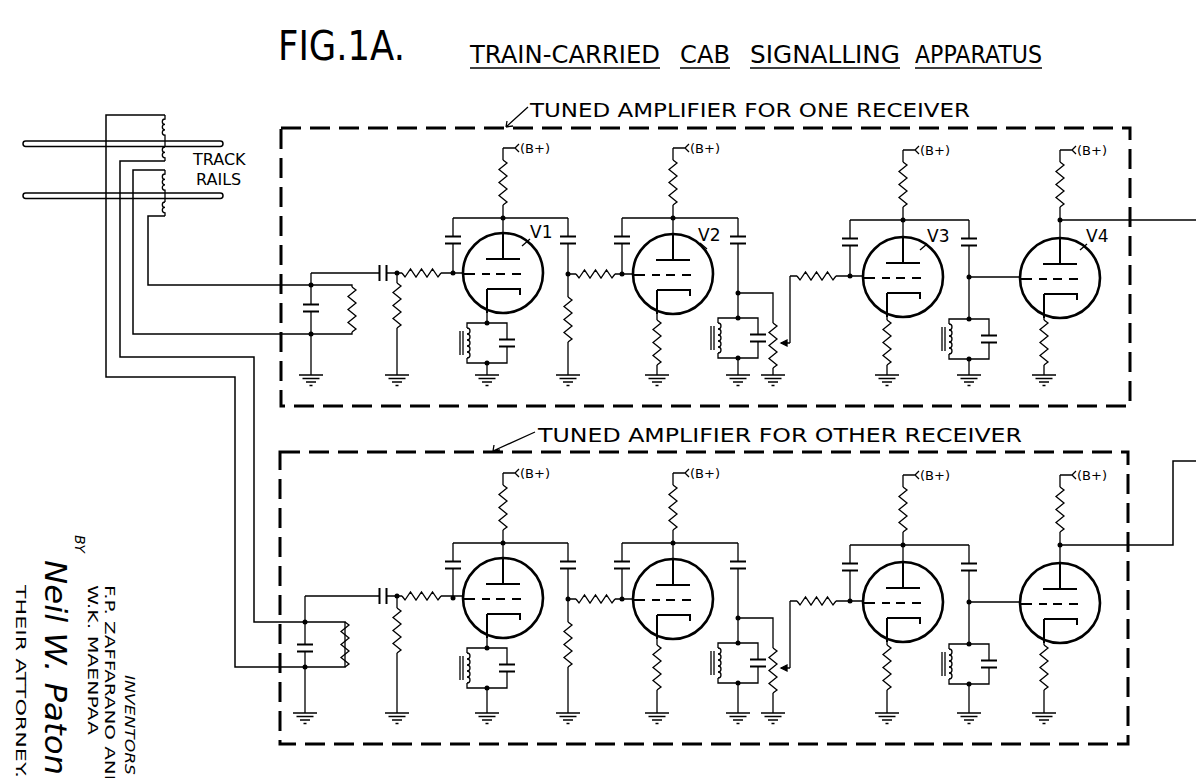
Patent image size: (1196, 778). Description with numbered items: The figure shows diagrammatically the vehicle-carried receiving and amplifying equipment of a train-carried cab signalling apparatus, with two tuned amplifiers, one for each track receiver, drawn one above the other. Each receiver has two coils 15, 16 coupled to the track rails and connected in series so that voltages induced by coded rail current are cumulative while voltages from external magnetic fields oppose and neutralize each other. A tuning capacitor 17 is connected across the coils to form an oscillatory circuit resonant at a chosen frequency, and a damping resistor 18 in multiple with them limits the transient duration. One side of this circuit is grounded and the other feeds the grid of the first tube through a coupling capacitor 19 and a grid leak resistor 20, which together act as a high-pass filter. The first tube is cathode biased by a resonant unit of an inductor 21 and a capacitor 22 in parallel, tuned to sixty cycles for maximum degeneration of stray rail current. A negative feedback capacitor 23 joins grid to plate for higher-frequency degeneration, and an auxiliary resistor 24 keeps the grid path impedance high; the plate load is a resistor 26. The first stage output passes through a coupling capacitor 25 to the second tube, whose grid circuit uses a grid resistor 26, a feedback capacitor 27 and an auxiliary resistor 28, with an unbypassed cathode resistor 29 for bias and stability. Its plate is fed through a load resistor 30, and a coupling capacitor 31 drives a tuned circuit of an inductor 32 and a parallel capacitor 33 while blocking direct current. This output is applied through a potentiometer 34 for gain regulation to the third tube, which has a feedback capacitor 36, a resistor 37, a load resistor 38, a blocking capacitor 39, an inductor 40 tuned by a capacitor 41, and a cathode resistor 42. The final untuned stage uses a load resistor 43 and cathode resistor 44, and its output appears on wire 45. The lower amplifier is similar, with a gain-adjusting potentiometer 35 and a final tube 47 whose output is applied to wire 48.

The receiver coil 15 is at (195, 212).
The receiver coil 16 is at (175, 229).
The tuning capacitor 17 is at (313, 314).
The damping resistor 18 is at (362, 306).
The coupling capacitor 19 is at (382, 267).
The grid leak resistor 20 is at (400, 312).
The inductor 21 is at (465, 354).
The capacitor 22 is at (510, 352).
The negative feedback capacitor 23 is at (451, 237).
The auxiliary resistor 24 is at (420, 269).
The coupling capacitor 25 is at (572, 236).
The resistor 26 is at (576, 341).
The negative feedback capacitor 27 is at (628, 245).
The auxiliary resistor 28 is at (600, 285).
The cathode resistor 29 is at (659, 360).
The load resistor 30 is at (679, 196).
The coupling capacitor 31 is at (745, 236).
The inductor 32 is at (718, 356).
The capacitor 33 is at (753, 345).
The potentiometer 34 is at (783, 355).
The gain-adjusting potentiometer 35 is at (798, 684).
The negative feedback capacitor 36 is at (841, 238).
The resistor 37 is at (805, 283).
The load resistor 38 is at (910, 194).
The blocking capacitor 39 is at (976, 238).
The inductor 40 is at (950, 357).
The capacitor 41 is at (992, 350).
The cathode resistor 42 is at (879, 350).
The load resistor 43 is at (1065, 196).
The cathode resistor 44 is at (1049, 358).
The wire 45 is at (1145, 220).
The tube 47 is at (1072, 638).
The wire 48 is at (1183, 460).